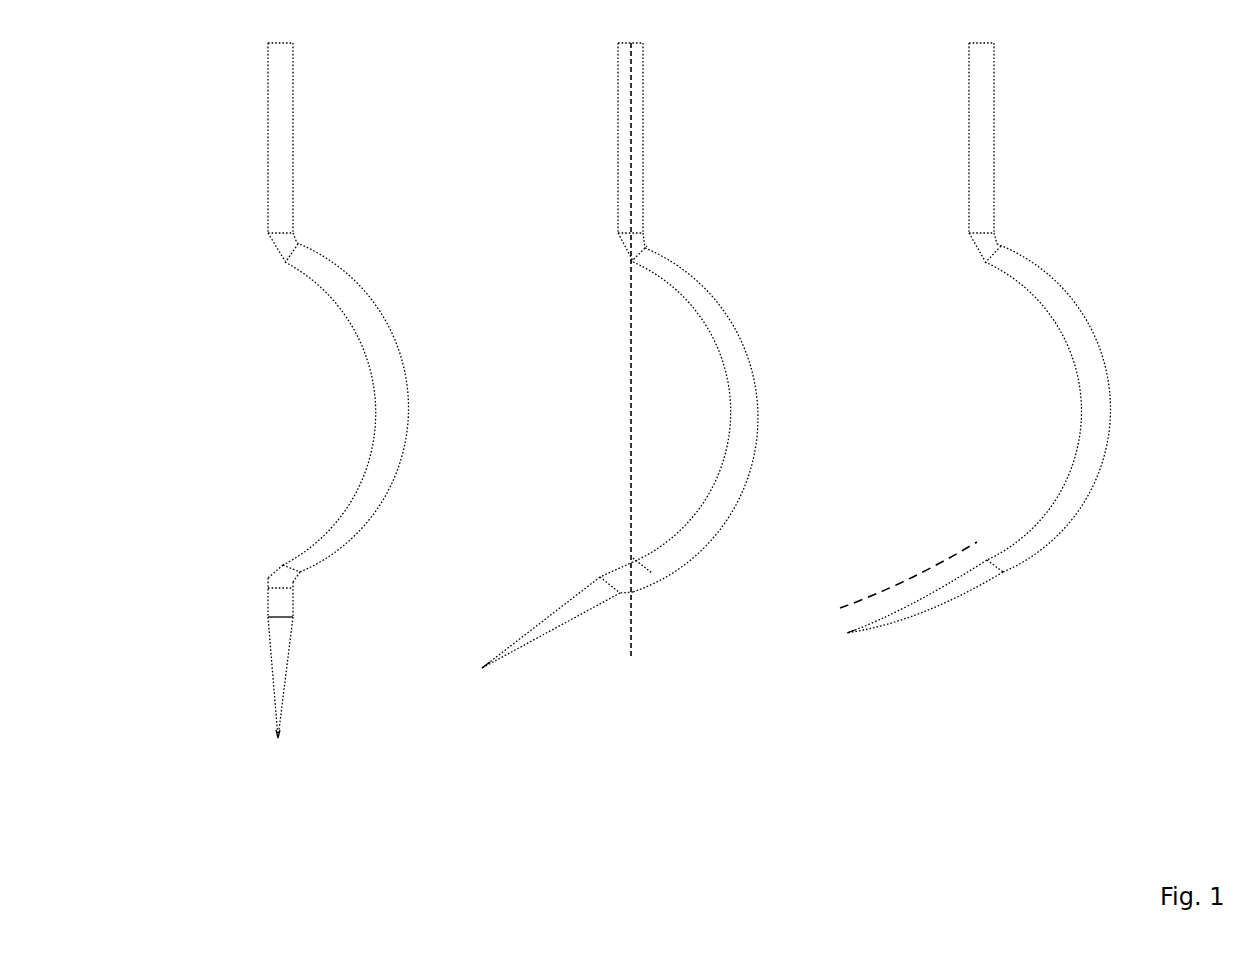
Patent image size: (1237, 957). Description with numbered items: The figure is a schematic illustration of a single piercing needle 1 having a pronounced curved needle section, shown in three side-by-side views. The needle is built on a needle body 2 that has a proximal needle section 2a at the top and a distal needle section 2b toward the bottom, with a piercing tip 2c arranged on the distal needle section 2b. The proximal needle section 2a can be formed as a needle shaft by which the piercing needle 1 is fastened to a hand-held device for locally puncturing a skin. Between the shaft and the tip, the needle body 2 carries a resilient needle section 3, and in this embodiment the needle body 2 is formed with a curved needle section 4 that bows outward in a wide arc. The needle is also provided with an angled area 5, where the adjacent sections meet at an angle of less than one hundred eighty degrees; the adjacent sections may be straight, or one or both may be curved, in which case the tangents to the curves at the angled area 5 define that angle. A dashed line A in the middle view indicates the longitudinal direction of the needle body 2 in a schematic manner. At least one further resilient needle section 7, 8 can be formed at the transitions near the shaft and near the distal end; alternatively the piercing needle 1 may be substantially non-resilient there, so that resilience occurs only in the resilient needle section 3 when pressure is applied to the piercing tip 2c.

The piercing needle 1 is at (1136, 66).
The needle body 2 is at (283, 167).
The proximal needle section 2a is at (283, 87).
The distal needle section 2b is at (282, 663).
The piercing tip 2c is at (278, 738).
The resilient needle section 3 is at (390, 374).
The curved needle section 4 is at (383, 473).
The angled area 5 is at (293, 582).
The further resilient needle section 7 is at (282, 252).
The further resilient needle section 8 is at (282, 577).
The dashed line A is at (632, 287).